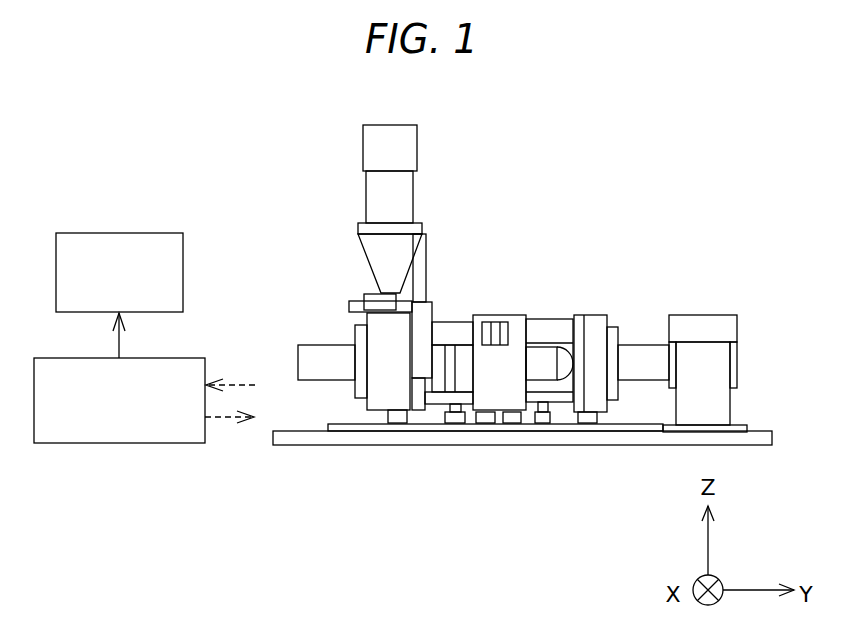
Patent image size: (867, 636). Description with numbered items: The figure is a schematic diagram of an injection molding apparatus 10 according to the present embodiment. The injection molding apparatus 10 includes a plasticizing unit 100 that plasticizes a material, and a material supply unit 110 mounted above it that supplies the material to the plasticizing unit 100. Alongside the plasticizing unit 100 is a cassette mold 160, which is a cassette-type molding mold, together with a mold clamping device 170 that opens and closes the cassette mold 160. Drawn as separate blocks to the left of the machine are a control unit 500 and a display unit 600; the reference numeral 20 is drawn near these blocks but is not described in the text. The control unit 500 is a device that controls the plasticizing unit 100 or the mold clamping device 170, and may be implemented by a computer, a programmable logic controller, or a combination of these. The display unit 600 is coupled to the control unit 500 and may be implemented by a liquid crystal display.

The injection molding apparatus 10 is at (582, 187).
The control system 20 is at (143, 122).
The plasticizing unit 100 is at (308, 315).
The material supply unit 110 is at (327, 203).
The cassette mold 160 is at (548, 302).
The mold clamping device 170 is at (682, 300).
The control unit 500 is at (120, 443).
The display unit 600 is at (118, 232).